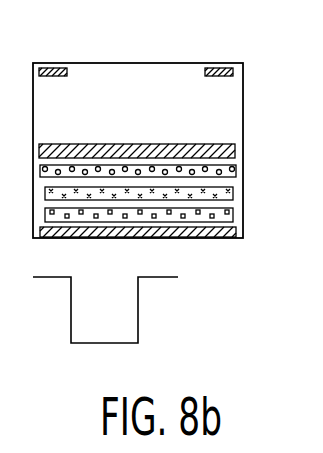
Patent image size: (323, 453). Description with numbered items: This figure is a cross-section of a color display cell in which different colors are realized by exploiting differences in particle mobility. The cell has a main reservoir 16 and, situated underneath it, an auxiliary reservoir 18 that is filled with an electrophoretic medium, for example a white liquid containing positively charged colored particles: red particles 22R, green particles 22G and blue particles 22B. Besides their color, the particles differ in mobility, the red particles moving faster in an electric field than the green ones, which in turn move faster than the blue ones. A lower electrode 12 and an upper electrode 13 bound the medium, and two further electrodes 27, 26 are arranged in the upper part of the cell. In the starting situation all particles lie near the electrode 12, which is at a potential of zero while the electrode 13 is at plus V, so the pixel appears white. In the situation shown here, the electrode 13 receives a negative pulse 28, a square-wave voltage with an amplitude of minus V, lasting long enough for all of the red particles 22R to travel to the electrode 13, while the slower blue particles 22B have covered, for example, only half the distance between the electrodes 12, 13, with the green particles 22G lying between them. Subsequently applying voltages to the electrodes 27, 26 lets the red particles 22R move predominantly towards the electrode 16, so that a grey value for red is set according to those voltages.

The electrode 12 is at (223, 236).
The electrode 13 is at (176, 146).
The main reservoir 16 is at (133, 90).
The auxiliary reservoir 18 is at (161, 188).
The red particles 22R is at (236, 166).
The blue particles 22B is at (233, 193).
The green particles 22G is at (230, 216).
The electrode 26 is at (51, 63).
The electrode 27 is at (219, 63).
The negative pulse 28 is at (138, 310).